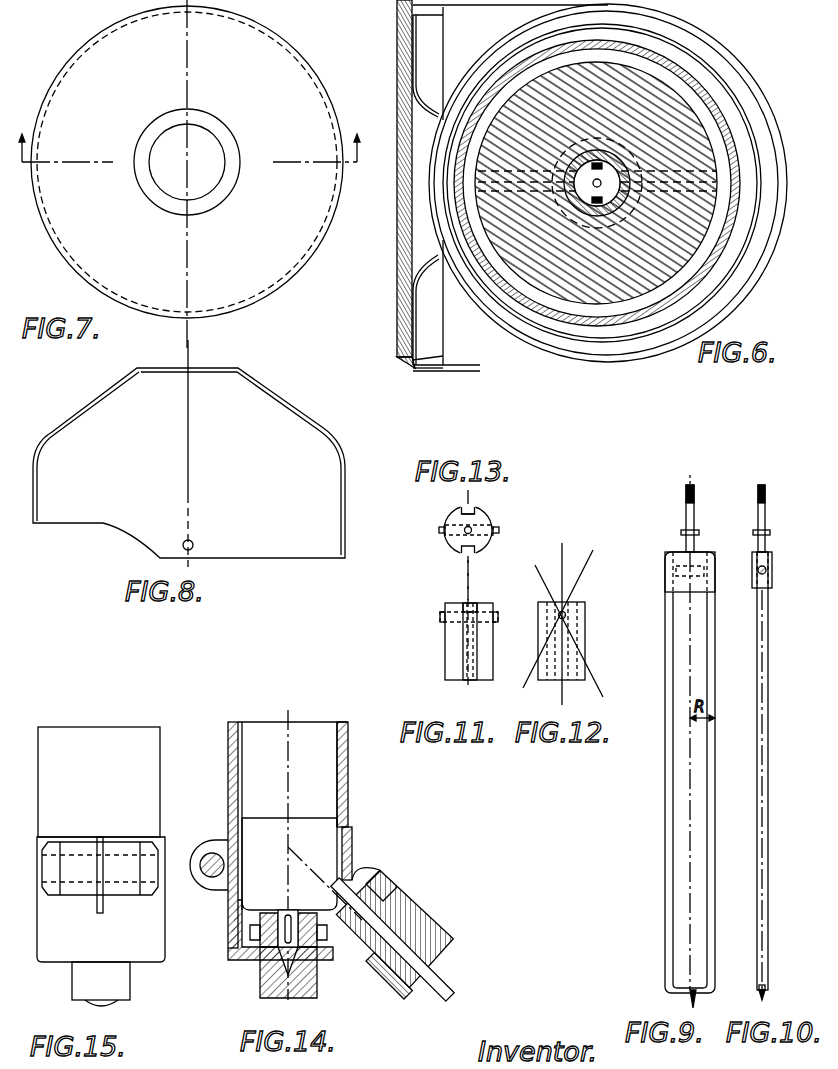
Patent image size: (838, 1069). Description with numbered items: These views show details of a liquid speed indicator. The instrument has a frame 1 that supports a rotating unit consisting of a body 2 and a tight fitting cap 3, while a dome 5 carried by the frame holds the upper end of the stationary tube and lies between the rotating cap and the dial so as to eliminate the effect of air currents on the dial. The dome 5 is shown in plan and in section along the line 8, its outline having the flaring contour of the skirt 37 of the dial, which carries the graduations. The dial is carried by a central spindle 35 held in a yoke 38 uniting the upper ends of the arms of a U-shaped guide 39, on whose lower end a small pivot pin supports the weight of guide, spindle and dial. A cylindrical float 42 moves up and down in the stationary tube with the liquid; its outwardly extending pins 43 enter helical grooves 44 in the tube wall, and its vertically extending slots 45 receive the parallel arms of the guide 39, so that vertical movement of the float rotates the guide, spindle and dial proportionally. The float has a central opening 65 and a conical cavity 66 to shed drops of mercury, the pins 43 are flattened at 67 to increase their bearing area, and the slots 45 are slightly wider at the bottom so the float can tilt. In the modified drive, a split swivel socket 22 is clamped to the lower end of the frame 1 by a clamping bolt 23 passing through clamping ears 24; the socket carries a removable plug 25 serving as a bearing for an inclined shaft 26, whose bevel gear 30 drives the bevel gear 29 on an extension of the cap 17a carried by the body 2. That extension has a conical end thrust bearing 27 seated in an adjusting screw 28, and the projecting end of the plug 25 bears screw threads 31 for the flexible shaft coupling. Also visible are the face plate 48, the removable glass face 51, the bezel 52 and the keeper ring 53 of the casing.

In FIG. 15, the frame 1 is at (142, 780).
In FIG. 14, the frame 1 is at (343, 772).
In FIG. 6, the body 2 is at (667, 115).
In FIG. 14, the body 2 is at (322, 750).
In FIG. 6, the cap 3 is at (733, 138).
In FIG. 7, the dome 5 is at (272, 257).
In FIG. 8, the dome 5 is at (312, 412).
In FIG. 6, the dome 5 is at (752, 150).
In FIG. 7, the section line 8 is at (188, 138).
In FIG. 14, the cap extension 17a is at (312, 843).
In FIG. 15, the split swivel socket 22 is at (101, 921).
In FIG. 14, the split swivel socket 22 is at (353, 852).
In FIG. 14, the clamping bolt 23 is at (210, 860).
In FIG. 15, the clamping ears 24 is at (117, 847).
In FIG. 14, the removable plug 25 is at (400, 905).
In FIG. 14, the inclined shaft 26 is at (400, 943).
In FIG. 14, the conical end thrust bearing 27 is at (275, 985).
In FIG. 14, the adjusting screw 28 is at (296, 998).
In FIG. 14, the bevel gear 29 is at (252, 937).
In FIG. 14, the bevel gear 30 is at (377, 882).
In FIG. 14, the screw threads 31 is at (388, 985).
In FIG. 9, the central spindle 35 is at (692, 513).
In FIG. 6, the skirt 37 is at (775, 168).
In FIG. 9, the yoke 38 is at (697, 558).
In FIG. 6, the U-shaped guide 39 is at (597, 207).
In FIG. 9, the U-shaped guide 39 is at (667, 772).
In FIG. 10, the U-shaped guide 39 is at (763, 728).
In FIG. 6, the cylindrical float 42 is at (582, 203).
In FIG. 11, the cylindrical float 42 is at (453, 648).
In FIG. 12, the cylindrical float 42 is at (580, 632).
In FIG. 13, the pins 43 is at (499, 530).
In FIG. 10, the helical grooves 44 is at (770, 995).
In FIG. 13, the vertically extending slots 45 is at (472, 513).
In FIG. 11, the vertically extending slots 45 is at (462, 683).
In FIG. 6, the face plate 48 is at (412, 62).
In FIG. 6, the removable glass face 51 is at (397, 268).
In FIG. 6, the bezel 52 is at (413, 373).
In FIG. 6, the keeper ring 53 is at (428, 310).
In FIG. 6, the central opening 65 is at (590, 190).
In FIG. 13, the central opening 65 is at (479, 528).
In FIG. 11, the conical cavity 66 is at (478, 607).
In FIG. 11, the flattened sides 67 is at (440, 616).